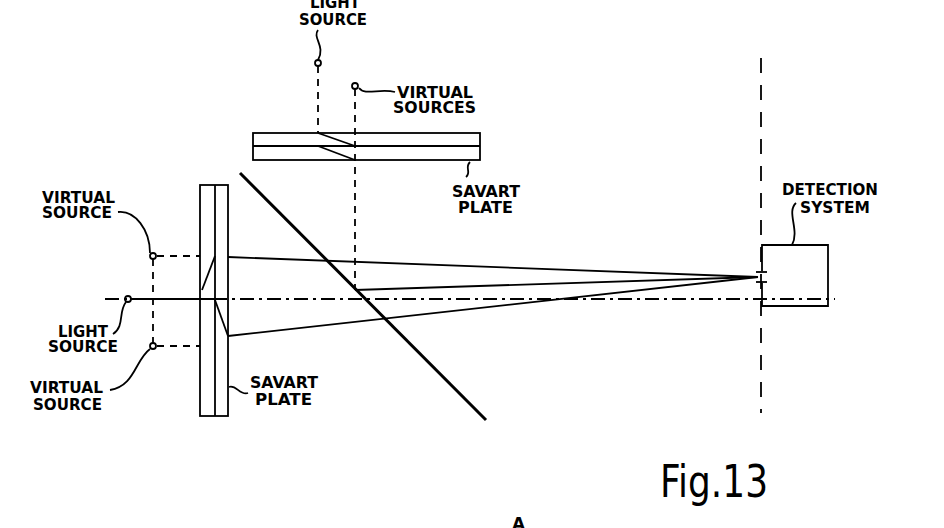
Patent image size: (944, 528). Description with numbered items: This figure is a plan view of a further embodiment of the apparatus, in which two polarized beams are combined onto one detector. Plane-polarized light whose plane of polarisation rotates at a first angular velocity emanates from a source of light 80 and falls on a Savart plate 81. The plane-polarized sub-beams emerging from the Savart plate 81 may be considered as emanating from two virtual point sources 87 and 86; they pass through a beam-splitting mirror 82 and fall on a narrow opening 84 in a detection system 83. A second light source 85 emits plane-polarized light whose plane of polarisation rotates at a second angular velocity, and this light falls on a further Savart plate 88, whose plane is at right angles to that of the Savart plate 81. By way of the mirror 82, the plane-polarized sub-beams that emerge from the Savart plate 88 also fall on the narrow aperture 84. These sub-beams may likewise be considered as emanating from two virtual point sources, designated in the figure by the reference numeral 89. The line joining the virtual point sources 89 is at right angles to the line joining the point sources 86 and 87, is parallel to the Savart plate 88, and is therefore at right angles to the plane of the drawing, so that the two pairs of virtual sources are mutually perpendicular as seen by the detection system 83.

The source of light 80 is at (128, 295).
The Savart plate 81 is at (209, 417).
The beam-splitting mirror 82 is at (466, 404).
The detection system 83 is at (802, 311).
The narrow opening 84 is at (756, 276).
The light source 85 is at (315, 63).
The virtual point source 86 is at (153, 350).
The virtual point source 87 is at (156, 252).
The Savart plate 88 is at (500, 150).
The virtual point sources 89 is at (358, 85).